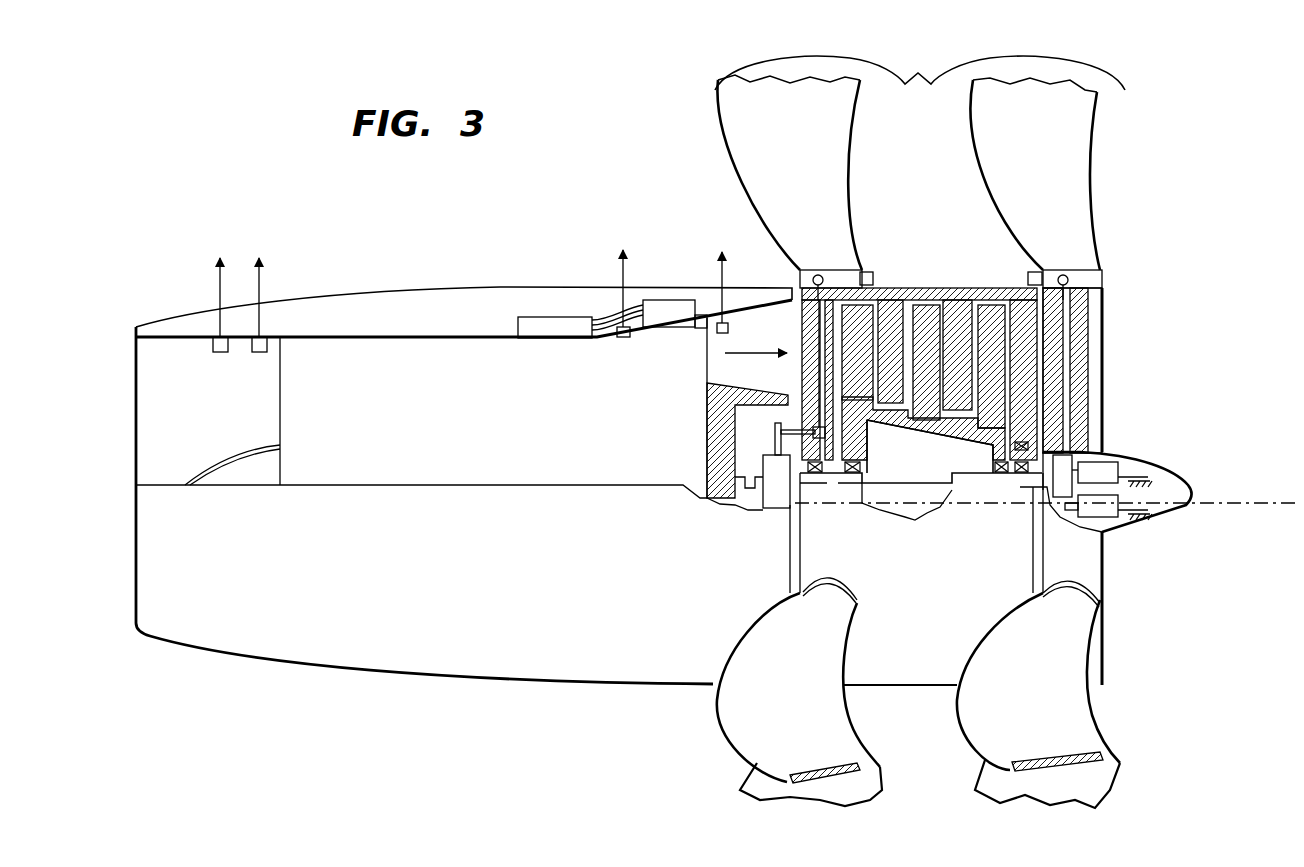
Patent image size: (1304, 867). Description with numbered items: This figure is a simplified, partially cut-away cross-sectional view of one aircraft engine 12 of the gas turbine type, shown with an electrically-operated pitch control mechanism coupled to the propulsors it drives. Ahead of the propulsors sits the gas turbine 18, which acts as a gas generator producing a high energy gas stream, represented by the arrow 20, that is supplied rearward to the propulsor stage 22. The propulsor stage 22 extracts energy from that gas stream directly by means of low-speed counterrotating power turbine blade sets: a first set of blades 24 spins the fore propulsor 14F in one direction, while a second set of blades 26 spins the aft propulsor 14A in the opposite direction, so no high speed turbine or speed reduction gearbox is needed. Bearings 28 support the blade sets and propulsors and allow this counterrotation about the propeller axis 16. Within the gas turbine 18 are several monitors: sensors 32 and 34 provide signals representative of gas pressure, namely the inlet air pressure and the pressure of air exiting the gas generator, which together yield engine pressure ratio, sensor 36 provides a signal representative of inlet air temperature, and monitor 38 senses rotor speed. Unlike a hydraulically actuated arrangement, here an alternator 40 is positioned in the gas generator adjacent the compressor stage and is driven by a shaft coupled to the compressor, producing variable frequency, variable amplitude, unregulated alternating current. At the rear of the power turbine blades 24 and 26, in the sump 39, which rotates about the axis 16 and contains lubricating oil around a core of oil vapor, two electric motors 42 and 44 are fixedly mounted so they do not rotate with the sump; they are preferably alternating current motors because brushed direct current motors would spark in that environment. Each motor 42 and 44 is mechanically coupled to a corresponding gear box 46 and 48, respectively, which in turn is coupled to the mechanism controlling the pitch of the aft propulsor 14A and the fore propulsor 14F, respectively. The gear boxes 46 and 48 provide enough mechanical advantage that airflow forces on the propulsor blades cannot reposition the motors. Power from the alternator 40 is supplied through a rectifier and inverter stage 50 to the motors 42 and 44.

The engine 12 is at (478, 230).
The fore propulsor 14F is at (800, 161).
The aft propulsor 14A is at (1058, 161).
The propeller axis 16 is at (1238, 490).
The gas turbine 18 is at (452, 423).
The gas stream arrow 20 is at (752, 356).
The propulsor stage 22 is at (920, 66).
The first set of blades 24 is at (960, 288).
The second set of blades 26 is at (922, 288).
The bearings 28 is at (1013, 446).
The sensor 32 is at (213, 350).
The sensor 34 is at (728, 328).
The sensor 36 is at (256, 352).
The monitor 38 is at (623, 340).
The sump 39 is at (1150, 497).
The alternator 40 is at (545, 316).
The electric motor 42 is at (1115, 478).
The electric motor 44 is at (1135, 523).
The gear box 46 is at (1068, 463).
The gear box 48 is at (773, 494).
The rectifier and inverter stage 50 is at (683, 308).